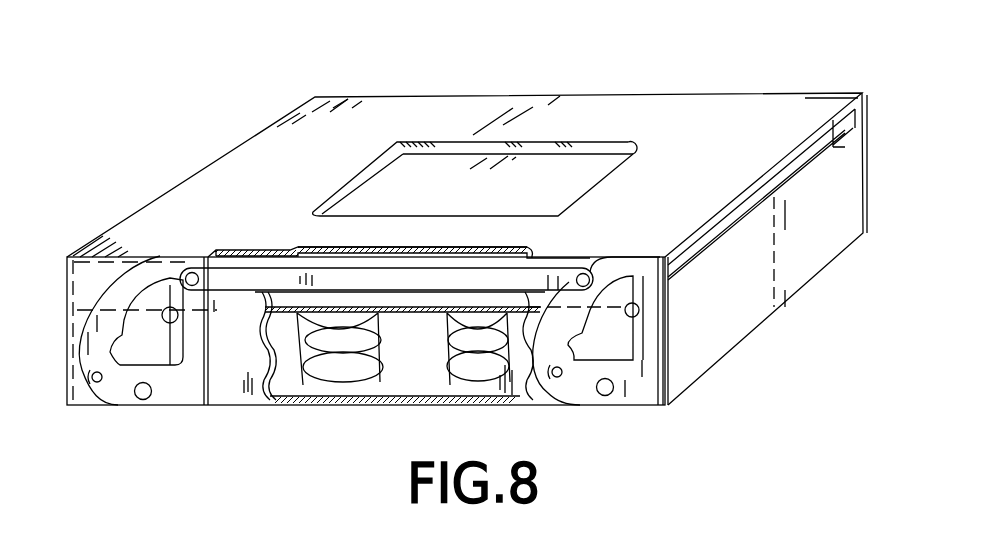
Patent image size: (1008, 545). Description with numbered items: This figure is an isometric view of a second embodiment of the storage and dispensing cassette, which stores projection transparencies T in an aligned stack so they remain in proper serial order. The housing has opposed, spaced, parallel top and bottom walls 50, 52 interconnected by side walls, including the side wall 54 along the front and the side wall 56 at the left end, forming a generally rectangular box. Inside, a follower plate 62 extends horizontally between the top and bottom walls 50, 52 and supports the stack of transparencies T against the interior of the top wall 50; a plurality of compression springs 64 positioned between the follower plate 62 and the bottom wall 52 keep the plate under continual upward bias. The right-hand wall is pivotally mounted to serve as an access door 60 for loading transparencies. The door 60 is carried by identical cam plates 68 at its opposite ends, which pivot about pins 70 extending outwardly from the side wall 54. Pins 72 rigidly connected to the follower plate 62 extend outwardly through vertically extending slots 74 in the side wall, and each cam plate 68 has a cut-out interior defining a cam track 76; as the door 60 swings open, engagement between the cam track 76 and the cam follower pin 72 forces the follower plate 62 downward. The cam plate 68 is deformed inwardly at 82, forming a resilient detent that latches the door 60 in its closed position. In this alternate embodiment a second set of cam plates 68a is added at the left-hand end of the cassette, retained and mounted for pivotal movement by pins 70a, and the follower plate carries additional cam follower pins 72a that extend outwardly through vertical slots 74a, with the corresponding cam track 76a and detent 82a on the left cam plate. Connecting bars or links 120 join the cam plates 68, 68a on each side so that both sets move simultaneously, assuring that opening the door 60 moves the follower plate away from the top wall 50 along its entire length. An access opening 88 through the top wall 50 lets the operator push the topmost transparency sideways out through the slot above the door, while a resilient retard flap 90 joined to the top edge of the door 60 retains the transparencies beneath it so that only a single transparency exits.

The top wall 50 is at (473, 247).
The bottom wall 52 is at (393, 397).
The side wall 54 is at (253, 395).
The side wall 56 is at (67, 258).
The access door 60 is at (672, 340).
The follower plate 62 is at (437, 312).
The compression springs 64 is at (340, 387).
The cam plates 68 is at (648, 383).
The second set of cam plates 68a is at (187, 395).
The pins 70 is at (608, 392).
The pins 70a is at (138, 397).
The pins 72 is at (640, 312).
The cam follower pins 72a is at (178, 302).
The slots 74 is at (638, 283).
The vertical slots 74a is at (176, 272).
The cam track 76 is at (598, 287).
The arcuate slot 76a is at (160, 257).
The inward deformation 82 is at (559, 377).
The hole 82a is at (100, 384).
The access opening 88 is at (443, 142).
The resilient flap 90 is at (780, 178).
The connecting bars or links 120 is at (409, 277).
The transparencies T is at (279, 309).